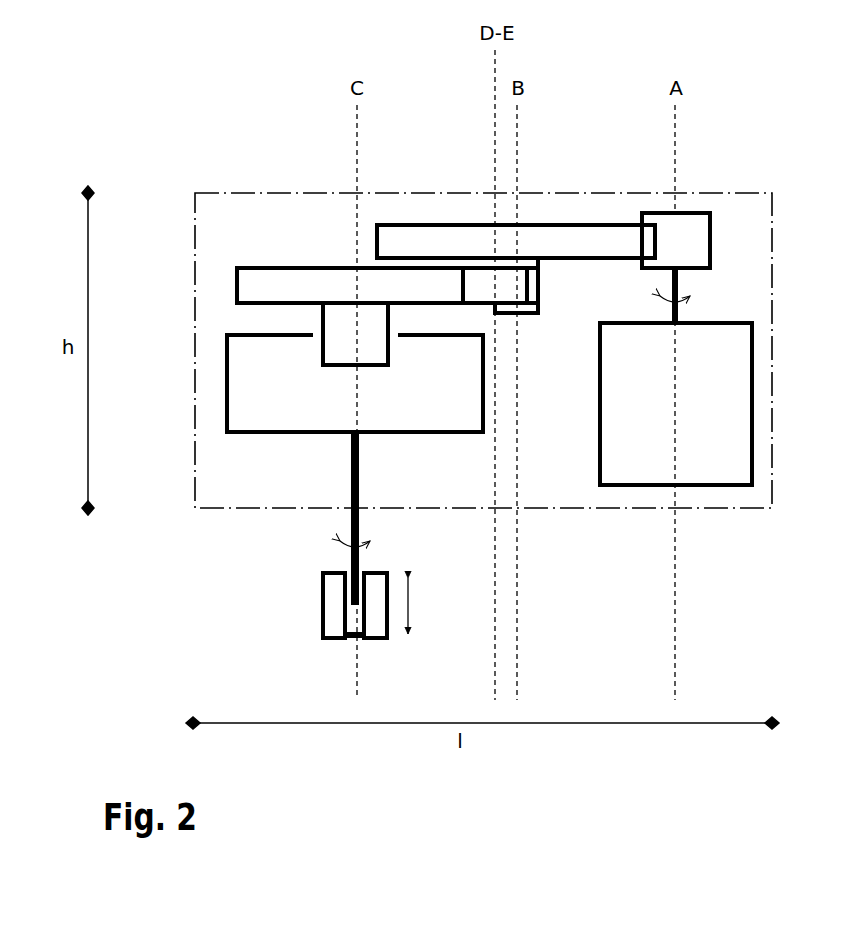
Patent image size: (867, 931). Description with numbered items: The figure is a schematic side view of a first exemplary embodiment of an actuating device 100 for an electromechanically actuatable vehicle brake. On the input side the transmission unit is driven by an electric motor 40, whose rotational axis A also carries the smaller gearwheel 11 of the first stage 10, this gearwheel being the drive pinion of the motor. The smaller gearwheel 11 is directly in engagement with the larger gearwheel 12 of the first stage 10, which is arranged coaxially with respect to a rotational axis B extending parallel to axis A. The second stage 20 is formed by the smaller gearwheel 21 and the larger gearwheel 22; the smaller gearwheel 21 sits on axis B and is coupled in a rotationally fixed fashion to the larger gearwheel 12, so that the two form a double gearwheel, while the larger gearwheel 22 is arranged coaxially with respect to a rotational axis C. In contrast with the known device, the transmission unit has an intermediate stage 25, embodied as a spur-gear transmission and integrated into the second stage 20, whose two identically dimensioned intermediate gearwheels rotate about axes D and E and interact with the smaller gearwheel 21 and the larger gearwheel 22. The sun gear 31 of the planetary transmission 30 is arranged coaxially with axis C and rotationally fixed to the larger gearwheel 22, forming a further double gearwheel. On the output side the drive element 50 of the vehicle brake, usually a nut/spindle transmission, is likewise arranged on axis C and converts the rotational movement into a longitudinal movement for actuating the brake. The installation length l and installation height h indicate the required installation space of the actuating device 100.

The first stage 10 is at (640, 240).
The smaller gearwheel of the first stage 11 is at (697, 236).
The larger gearwheel of the first stage 12 is at (386, 240).
The second stage 20 is at (452, 283).
The smaller gearwheel of the second stage 21 is at (540, 320).
The larger gearwheel of the second stage 22 is at (255, 283).
The intermediate stage 25 is at (484, 280).
The planetary transmission 30 is at (387, 410).
The sun gear 31 is at (375, 322).
The electric motor 40 is at (632, 452).
The drive element 50 is at (306, 618).
The actuating device 100 is at (772, 508).